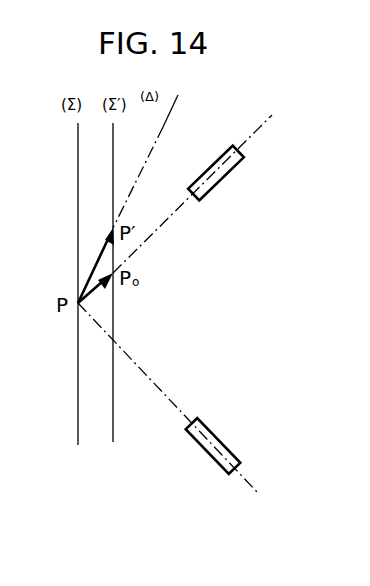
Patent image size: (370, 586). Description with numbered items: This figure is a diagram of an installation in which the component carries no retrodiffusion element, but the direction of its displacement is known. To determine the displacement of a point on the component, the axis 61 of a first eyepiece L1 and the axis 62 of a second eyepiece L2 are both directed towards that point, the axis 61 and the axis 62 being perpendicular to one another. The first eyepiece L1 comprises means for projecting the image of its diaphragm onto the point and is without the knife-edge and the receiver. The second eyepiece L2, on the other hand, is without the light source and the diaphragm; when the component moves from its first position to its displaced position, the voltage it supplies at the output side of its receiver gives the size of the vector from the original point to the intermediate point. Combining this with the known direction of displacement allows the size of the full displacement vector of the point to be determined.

The axis of the first eyepiece 61 is at (157, 229).
The axis of the second eyepiece 62 is at (167, 402).
The first eyepiece L1 is at (226, 181).
The second eyepiece L2 is at (231, 445).